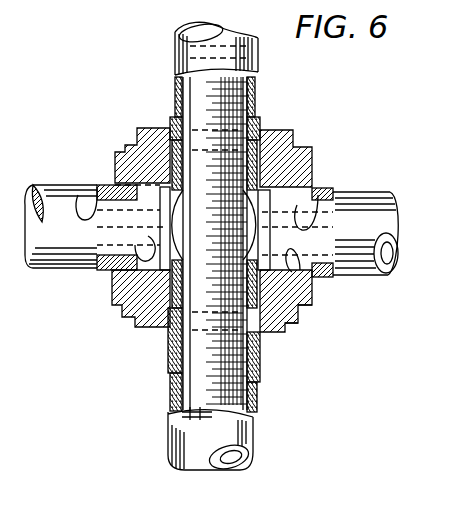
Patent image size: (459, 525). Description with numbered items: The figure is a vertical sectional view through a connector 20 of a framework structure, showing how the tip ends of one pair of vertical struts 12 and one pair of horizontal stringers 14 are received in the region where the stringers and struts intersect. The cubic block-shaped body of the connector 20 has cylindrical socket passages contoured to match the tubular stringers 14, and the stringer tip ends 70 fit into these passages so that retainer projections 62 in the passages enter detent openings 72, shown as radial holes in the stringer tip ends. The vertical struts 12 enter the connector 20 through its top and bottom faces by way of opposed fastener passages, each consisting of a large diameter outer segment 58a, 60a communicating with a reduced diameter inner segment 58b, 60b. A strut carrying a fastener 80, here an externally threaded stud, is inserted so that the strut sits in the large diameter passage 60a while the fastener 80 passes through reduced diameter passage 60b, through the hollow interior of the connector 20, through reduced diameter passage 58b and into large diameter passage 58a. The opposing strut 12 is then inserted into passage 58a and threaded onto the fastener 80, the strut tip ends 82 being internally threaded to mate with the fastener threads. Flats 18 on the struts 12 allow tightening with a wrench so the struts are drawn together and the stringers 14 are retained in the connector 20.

The vertical strut 12 is at (176, 46).
The horizontal stringer 14 is at (42, 186).
The flats 18 is at (256, 92).
The connector 20 is at (337, 175).
The large diameter outer segment 58a is at (262, 160).
The reduced diameter inner segment 58b is at (270, 188).
The large diameter outer segment 60a is at (266, 330).
The reduced diameter inner segment 60b is at (286, 305).
The retainer projection 62 is at (94, 200).
The stringer tip end 70 is at (276, 190).
The detent opening 72 is at (160, 135).
The fastener 80 is at (200, 380).
The strut tip end 82 is at (258, 120).